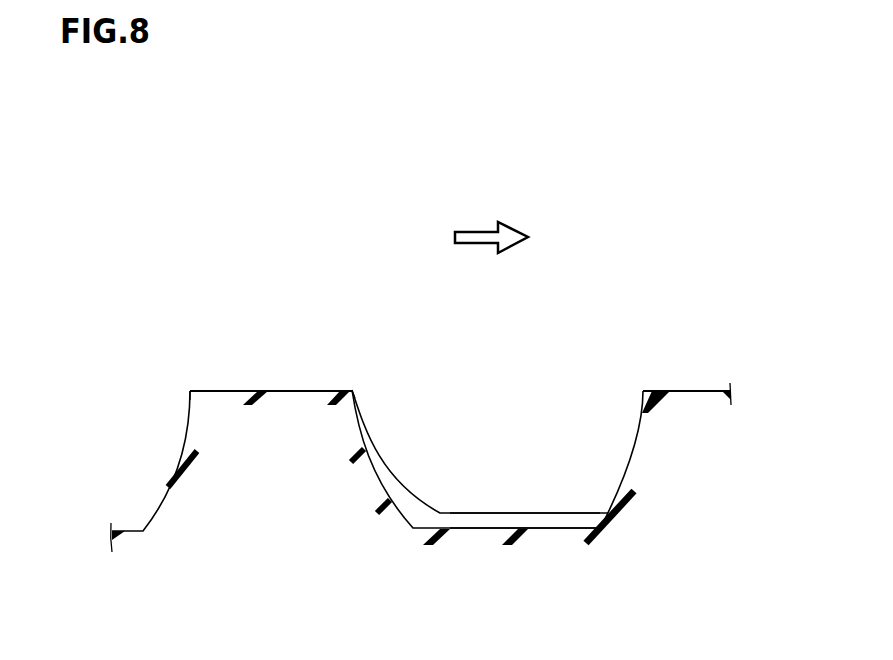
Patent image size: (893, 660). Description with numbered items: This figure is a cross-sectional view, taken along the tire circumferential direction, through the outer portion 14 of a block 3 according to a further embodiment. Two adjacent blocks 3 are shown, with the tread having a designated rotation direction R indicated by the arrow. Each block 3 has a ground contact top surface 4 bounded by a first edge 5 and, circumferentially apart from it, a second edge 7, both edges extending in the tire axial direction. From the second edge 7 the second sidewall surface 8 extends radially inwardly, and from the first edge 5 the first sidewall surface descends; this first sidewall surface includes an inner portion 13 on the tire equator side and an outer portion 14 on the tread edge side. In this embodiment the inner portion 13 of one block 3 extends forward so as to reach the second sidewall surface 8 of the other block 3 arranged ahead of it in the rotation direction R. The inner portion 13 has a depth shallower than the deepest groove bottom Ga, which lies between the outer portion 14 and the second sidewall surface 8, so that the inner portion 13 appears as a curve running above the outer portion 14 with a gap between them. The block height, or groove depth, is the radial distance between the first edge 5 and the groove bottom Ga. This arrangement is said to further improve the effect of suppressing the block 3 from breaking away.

The block 3 is at (242, 363).
The ground contact top surface 4 is at (293, 391).
The first edge 5 is at (352, 391).
The second edge 7 is at (190, 391).
The second sidewall surface 8 is at (183, 437).
The inner portion 13 is at (380, 450).
The outer portion 14 is at (383, 488).
The groove bottom Ga is at (507, 526).
The rotation direction R is at (502, 237).